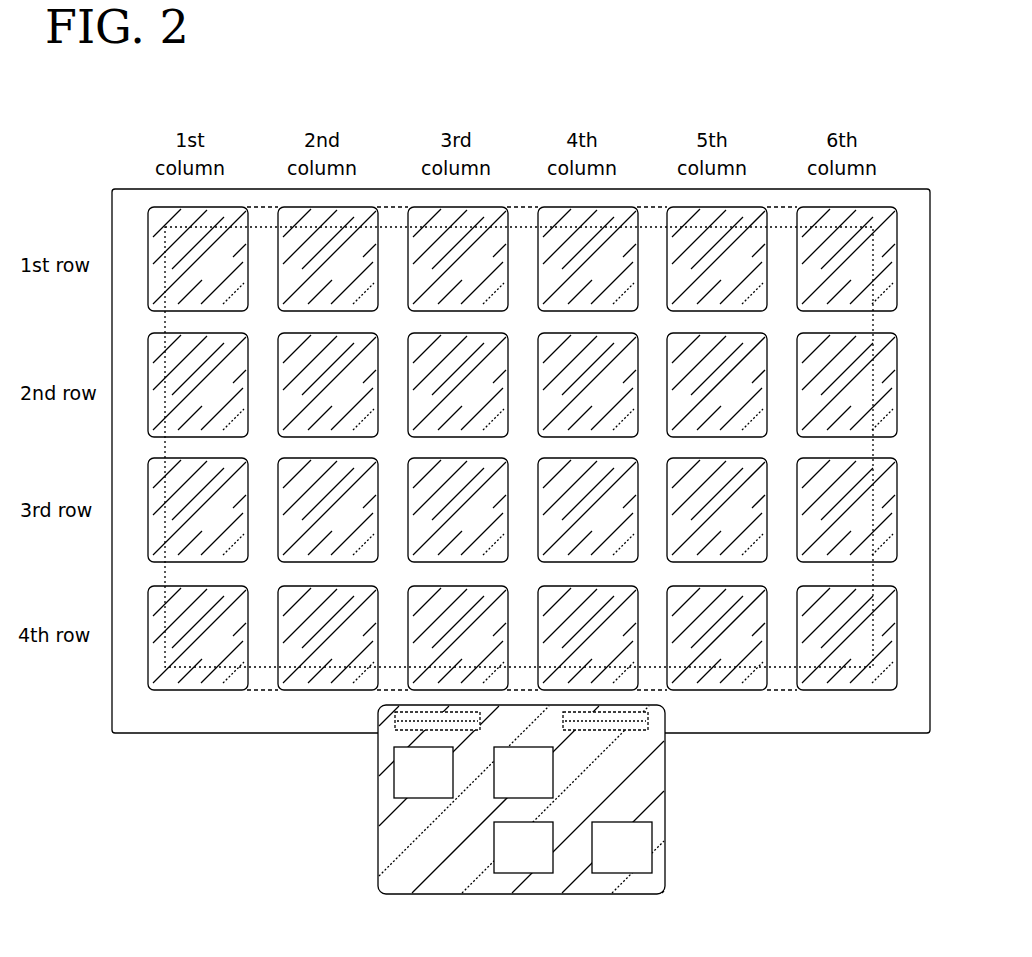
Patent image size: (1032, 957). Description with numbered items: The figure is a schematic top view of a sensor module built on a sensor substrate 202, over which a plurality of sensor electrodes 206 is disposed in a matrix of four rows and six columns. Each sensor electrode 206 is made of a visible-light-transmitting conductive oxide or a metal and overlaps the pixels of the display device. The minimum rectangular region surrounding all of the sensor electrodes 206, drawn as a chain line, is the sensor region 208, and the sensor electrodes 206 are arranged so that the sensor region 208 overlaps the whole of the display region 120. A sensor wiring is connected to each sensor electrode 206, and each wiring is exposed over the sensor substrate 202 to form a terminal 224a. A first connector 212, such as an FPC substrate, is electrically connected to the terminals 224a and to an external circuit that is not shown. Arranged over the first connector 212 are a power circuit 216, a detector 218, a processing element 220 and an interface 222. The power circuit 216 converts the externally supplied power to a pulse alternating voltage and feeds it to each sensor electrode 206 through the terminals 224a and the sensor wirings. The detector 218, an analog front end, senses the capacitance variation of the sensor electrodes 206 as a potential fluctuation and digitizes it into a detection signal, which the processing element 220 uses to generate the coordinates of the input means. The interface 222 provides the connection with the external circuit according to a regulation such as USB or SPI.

The sensor substrate 202 is at (129, 206).
The display region 120 is at (165, 578).
The sensor region 208 is at (522, 518).
The sensor electrode 206 is at (840, 677).
The first connector 212 is at (540, 799).
The terminal 224a is at (650, 722).
The power circuit 216 is at (423, 772).
The detector 218 is at (523, 772).
The processing element 220 is at (523, 847).
The interface 222 is at (622, 847).